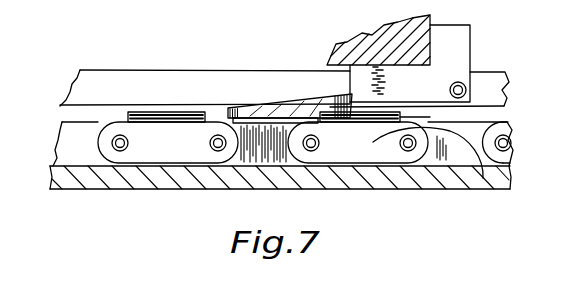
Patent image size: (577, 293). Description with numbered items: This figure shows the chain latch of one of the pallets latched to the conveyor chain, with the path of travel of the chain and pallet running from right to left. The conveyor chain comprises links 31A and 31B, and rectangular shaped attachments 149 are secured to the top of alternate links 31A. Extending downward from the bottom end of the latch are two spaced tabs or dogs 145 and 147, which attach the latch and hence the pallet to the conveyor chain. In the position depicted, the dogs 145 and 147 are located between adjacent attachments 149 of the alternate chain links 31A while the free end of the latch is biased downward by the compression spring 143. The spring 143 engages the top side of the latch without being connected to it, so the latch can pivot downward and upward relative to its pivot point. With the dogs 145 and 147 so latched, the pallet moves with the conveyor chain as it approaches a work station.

The conveyor chain link 31A is at (168, 147).
The conveyor chain link 31B is at (352, 181).
The compression spring 143 is at (353, 94).
The dog 145 is at (227, 118).
The dog 147 is at (302, 105).
The rectangular shaped attachment 149 is at (398, 118).